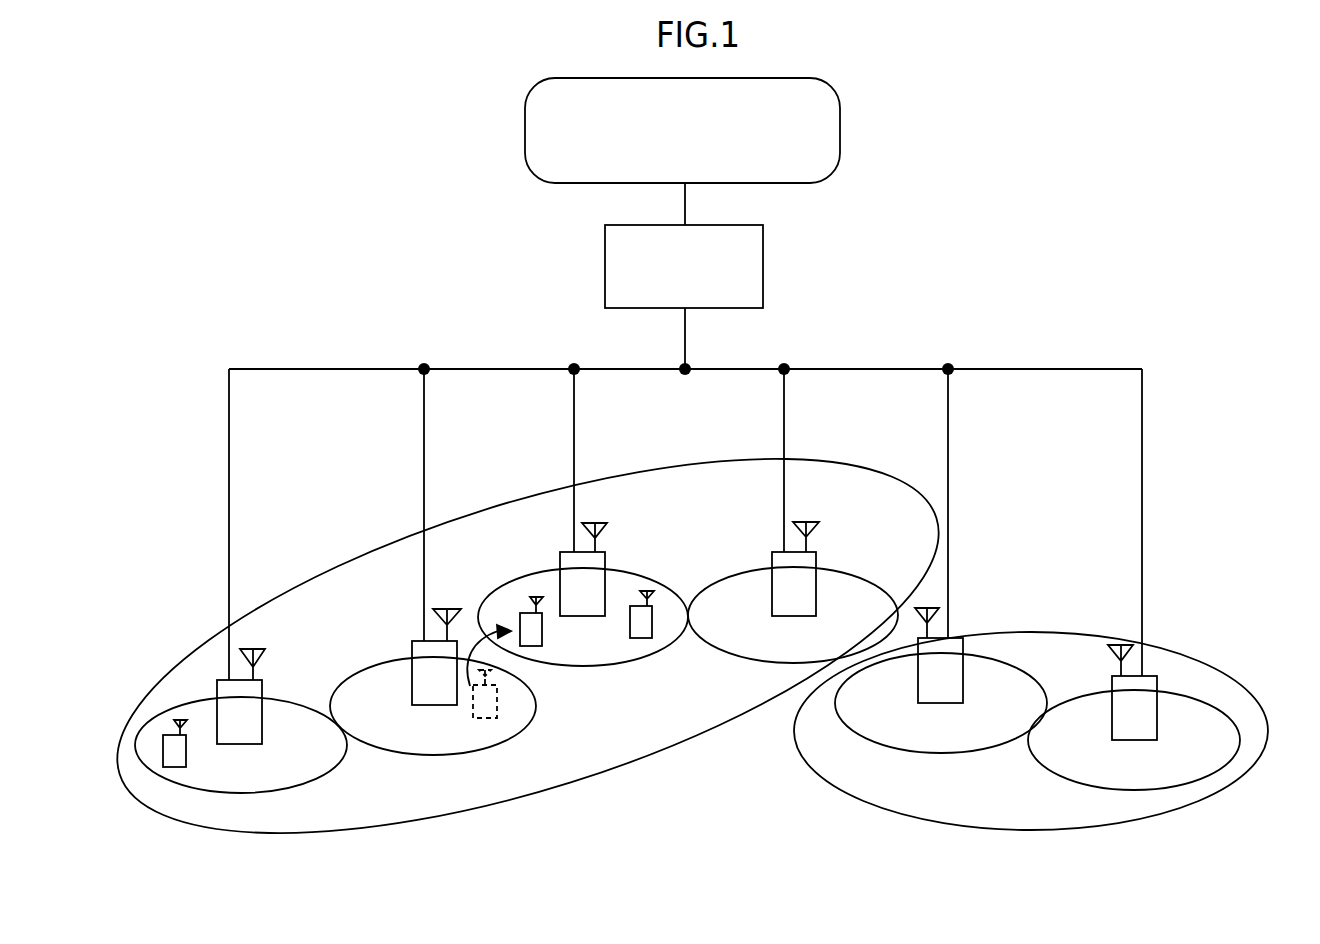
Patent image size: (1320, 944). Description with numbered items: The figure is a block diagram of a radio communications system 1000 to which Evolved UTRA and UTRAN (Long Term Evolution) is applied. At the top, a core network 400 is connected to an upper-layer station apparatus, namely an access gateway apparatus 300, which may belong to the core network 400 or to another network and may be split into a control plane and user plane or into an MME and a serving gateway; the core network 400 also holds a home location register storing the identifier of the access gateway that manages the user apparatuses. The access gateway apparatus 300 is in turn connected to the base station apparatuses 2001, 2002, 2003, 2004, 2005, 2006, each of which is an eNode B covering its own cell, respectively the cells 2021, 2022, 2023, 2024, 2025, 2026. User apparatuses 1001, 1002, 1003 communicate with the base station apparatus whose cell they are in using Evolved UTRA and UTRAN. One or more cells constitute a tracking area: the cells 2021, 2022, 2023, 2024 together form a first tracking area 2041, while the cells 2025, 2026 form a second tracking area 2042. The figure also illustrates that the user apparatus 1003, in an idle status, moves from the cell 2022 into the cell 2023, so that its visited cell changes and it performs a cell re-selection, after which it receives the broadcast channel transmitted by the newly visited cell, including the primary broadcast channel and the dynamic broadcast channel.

The core network 400 is at (840, 128).
The access gateway apparatus 300 is at (763, 240).
The radio communications system 1000 is at (1097, 241).
The tracking area 2041 is at (845, 490).
The tracking area 2042 is at (1035, 633).
The cell 2021 is at (313, 780).
The cell 2022 is at (477, 753).
The cell 2023 is at (640, 576).
The cell 2024 is at (845, 572).
The cell 2025 is at (925, 752).
The cell 2026 is at (1058, 775).
The base station apparatus 2001 is at (262, 722).
The base station apparatus 2002 is at (445, 706).
The base station apparatus 2003 is at (612, 507).
The base station apparatus 2004 is at (812, 507).
The base station apparatus 2005 is at (918, 690).
The base station apparatus 2006 is at (1112, 720).
The user apparatus 1001 is at (186, 757).
The user apparatus 1002 is at (645, 638).
The user apparatus 1003 is at (533, 646).